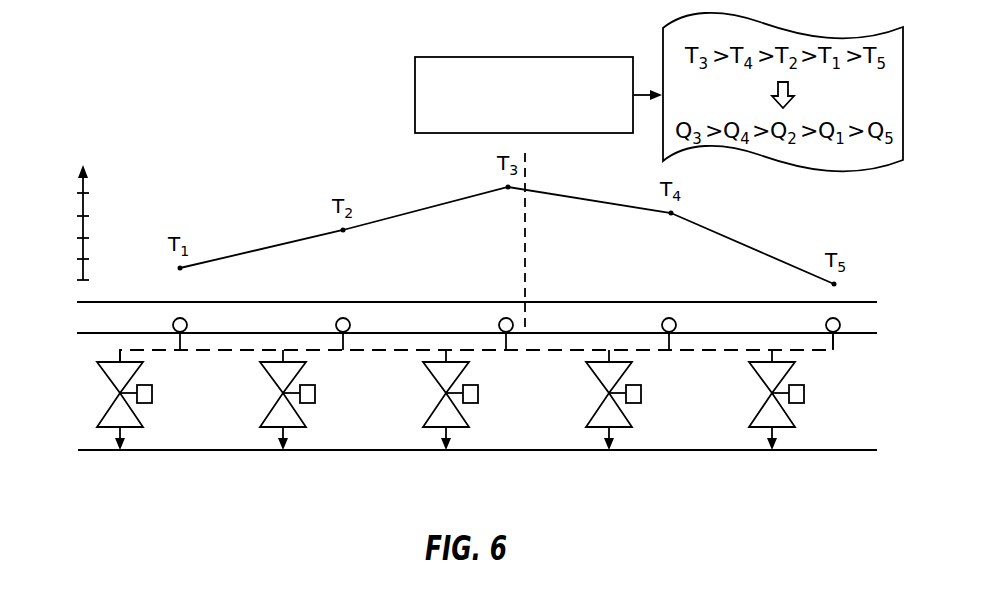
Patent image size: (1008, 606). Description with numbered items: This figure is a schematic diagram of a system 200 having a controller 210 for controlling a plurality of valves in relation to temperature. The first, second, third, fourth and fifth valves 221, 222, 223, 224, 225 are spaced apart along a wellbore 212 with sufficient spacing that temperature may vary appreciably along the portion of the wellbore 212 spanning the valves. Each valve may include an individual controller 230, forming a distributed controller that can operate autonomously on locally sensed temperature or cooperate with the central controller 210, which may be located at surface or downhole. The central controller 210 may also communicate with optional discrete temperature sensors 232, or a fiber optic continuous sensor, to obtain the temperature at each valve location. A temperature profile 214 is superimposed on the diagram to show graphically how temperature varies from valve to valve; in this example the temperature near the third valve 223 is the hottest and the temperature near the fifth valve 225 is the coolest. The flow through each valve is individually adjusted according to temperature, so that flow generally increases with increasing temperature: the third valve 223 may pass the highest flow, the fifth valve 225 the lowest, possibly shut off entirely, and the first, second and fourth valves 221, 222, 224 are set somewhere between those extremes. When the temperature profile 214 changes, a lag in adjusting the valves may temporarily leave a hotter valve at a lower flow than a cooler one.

The system 200 is at (118, 52).
The controller 210 is at (450, 57).
The wellbore 212 is at (172, 450).
The temperature profile 214 is at (114, 220).
The first valve 221 is at (107, 378).
The second valve 222 is at (270, 378).
The third valve 223 is at (433, 378).
The fourth valve 224 is at (596, 378).
The fifth valve 225 is at (759, 378).
The individual controller 230 is at (145, 385).
The discrete temperature sensor 232 is at (182, 318).